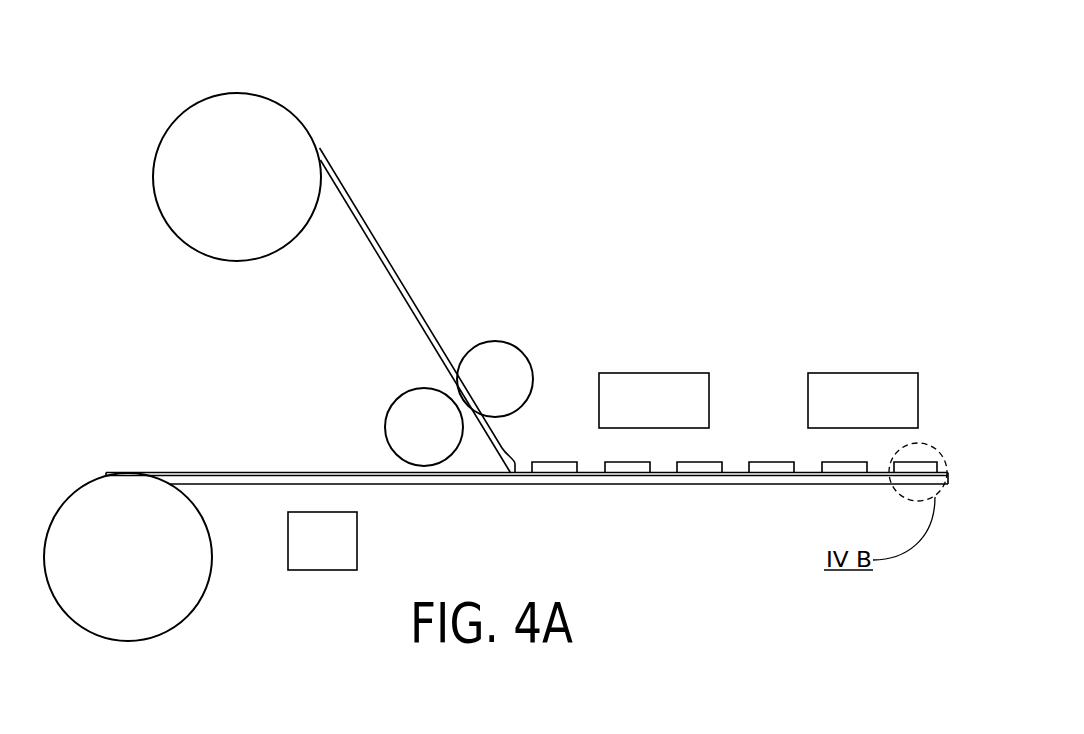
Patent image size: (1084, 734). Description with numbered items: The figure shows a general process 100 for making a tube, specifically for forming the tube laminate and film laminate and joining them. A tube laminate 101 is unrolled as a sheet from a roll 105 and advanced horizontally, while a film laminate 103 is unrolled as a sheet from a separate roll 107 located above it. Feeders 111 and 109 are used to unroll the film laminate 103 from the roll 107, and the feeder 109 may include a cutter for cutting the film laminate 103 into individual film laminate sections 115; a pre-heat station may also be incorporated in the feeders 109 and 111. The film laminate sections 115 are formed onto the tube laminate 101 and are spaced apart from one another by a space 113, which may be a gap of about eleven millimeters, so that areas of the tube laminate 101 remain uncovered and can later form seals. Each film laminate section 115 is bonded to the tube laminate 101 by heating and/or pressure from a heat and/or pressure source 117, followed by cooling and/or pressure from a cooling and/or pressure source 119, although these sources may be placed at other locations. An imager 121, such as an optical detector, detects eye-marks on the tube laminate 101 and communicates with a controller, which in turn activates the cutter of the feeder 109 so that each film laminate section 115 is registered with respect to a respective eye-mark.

The label application system 100 is at (755, 156).
The tube laminate 101 is at (232, 481).
The film laminate 103 is at (367, 230).
The roll 105 is at (120, 583).
The roll 107 is at (205, 188).
The feeder 109 is at (488, 362).
The feeder 111 is at (402, 420).
The space 113 is at (524, 467).
The film laminate section 115 is at (765, 448).
The heat and/or pressure source 117 is at (677, 387).
The cooling and/or pressure source 119 is at (907, 400).
The imager 121 is at (342, 557).